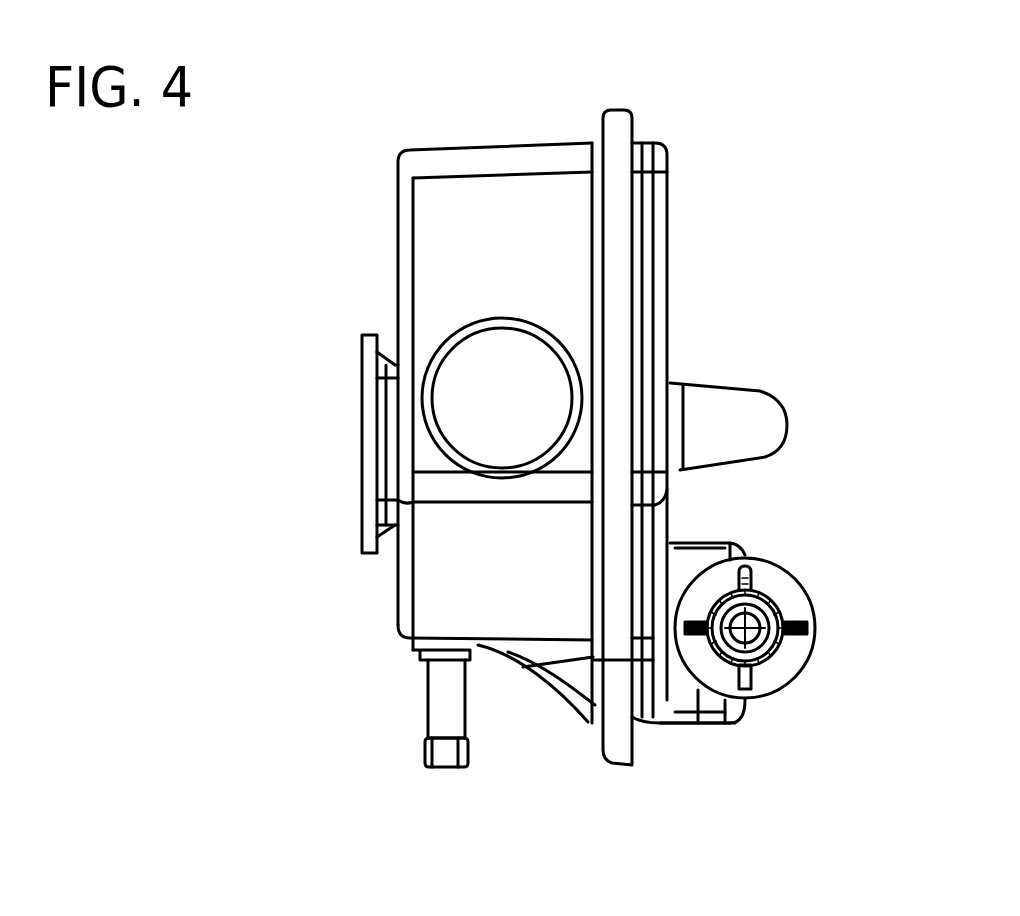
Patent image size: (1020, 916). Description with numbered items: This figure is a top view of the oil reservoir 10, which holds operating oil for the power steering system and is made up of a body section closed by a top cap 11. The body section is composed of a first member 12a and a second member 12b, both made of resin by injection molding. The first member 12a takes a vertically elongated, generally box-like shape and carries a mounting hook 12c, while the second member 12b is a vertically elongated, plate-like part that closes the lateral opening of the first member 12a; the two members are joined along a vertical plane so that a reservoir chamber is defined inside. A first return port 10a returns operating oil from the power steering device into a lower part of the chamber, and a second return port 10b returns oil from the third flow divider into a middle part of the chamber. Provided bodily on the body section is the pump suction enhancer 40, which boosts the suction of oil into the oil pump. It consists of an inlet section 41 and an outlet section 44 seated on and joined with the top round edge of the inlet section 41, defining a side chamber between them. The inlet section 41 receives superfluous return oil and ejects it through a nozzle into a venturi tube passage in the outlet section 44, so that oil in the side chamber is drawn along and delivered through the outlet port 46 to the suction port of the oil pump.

The oil reservoir 10 is at (380, 166).
The first return port 10a is at (427, 722).
The second return port 10b is at (743, 412).
The top cap 11 is at (537, 365).
The first member 12a is at (460, 262).
The second member 12b is at (662, 217).
The mounting hook 12c is at (372, 443).
The pump suction enhancer 40 is at (832, 607).
The inlet section 41 is at (695, 697).
The outlet section 44 is at (783, 662).
The outlet port 46 is at (770, 562).